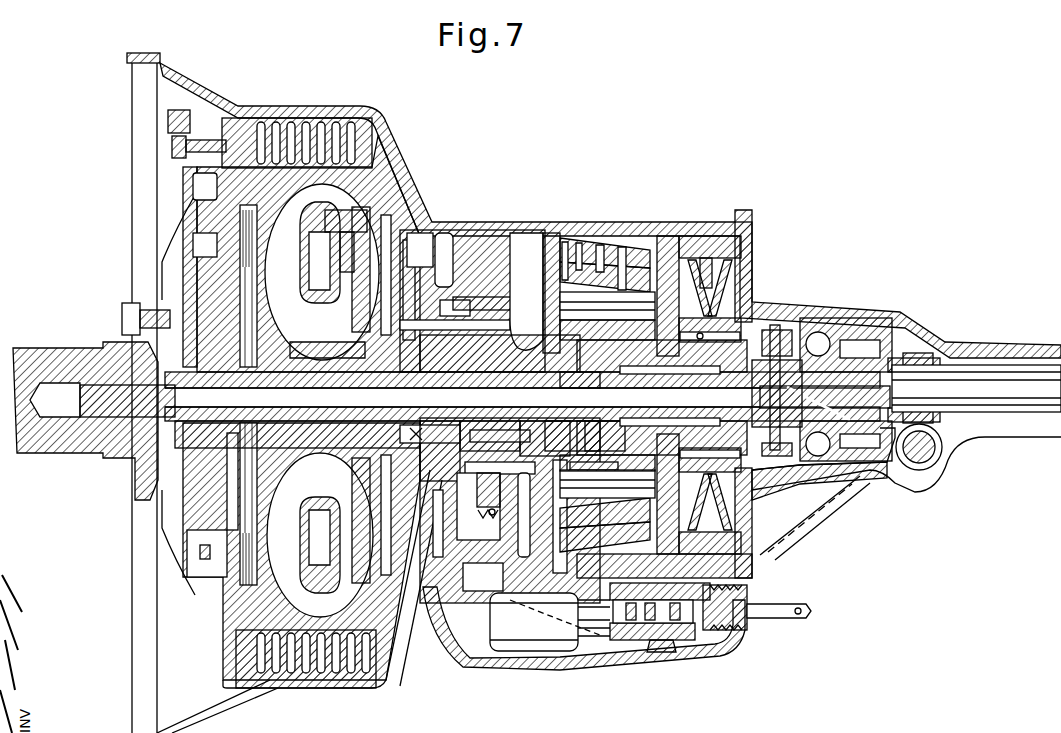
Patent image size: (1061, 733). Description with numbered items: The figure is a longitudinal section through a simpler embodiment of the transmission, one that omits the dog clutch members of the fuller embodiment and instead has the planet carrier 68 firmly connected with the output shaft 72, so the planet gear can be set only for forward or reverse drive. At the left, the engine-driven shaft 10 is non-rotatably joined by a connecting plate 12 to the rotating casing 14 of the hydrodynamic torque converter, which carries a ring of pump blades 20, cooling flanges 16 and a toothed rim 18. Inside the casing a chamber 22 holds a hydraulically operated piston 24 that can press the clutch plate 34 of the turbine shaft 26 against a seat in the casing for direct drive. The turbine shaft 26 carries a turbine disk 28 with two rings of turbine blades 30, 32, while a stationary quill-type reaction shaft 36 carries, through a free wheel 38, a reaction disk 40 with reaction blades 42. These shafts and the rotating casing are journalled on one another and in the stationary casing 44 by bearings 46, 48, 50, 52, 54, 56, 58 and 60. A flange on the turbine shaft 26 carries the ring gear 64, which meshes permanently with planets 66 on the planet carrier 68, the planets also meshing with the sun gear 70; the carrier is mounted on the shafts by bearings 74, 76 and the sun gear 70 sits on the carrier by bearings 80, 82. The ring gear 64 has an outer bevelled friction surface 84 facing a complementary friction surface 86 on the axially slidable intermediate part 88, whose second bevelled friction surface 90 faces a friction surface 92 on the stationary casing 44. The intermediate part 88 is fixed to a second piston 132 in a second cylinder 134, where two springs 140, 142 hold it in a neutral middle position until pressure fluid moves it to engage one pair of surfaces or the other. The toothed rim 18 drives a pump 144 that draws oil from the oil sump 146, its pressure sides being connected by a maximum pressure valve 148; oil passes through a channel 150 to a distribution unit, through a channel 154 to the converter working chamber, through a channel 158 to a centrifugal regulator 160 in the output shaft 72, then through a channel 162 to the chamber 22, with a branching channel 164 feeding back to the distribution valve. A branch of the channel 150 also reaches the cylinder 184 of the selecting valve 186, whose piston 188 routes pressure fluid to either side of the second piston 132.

The shaft 10 is at (78, 445).
The connecting plate 12 is at (170, 222).
The rotating casing 14 is at (388, 130).
The cooling flanges 16 is at (262, 125).
The toothed rim 18 is at (508, 300).
The pump blades 20 is at (296, 248).
The chamber 22 is at (180, 268).
The hydraulically operated piston 24 is at (215, 228).
The turbine shaft 26 is at (228, 393).
The turbine disk 28 is at (326, 348).
The turbine blades 30 is at (346, 225).
The turbine blades 32 is at (355, 290).
The clutch plate 34 is at (268, 512).
The reaction shaft 36 is at (518, 330).
The free wheel 38 is at (402, 420).
The reaction disk 40 is at (362, 322).
The reaction blades 42 is at (344, 248).
The stationary casing 44 is at (345, 108).
The bearing 46 is at (185, 405).
The bearing 48 is at (386, 410).
The bearing 50 is at (432, 425).
The bearing 52 is at (365, 470).
The bearing 54 is at (500, 494).
The bearing 56 is at (518, 310).
The bearing 58 is at (552, 425).
The bearing 60 is at (492, 430).
The ring gear 64 is at (556, 252).
The planets 66 is at (556, 270).
The planet carrier 68 is at (580, 304).
The sun gear 70 is at (625, 388).
The output shaft 72 is at (948, 385).
The bearing 74 is at (570, 380).
The bearing 76 is at (596, 422).
The bearing 80 is at (655, 388).
The bearing 82 is at (700, 350).
The bevelled friction surface 84 is at (552, 234).
The friction surface 86 is at (578, 234).
The intermediate part 88 is at (668, 236).
The second bevelled friction surface 90 is at (604, 234).
The friction surface 92 is at (630, 234).
The second piston 132 is at (752, 230).
The second cylinder 134 is at (695, 240).
The spring 140 is at (722, 272).
The spring 142 is at (735, 284).
The pump 144 is at (507, 262).
The oil sump 146 is at (495, 642).
The maximum pressure valve 148 is at (490, 535).
The channel 150 is at (510, 568).
The channel 154 is at (462, 425).
The channel 158 is at (826, 502).
The centrifugal regulator 160 is at (768, 340).
The channel 162 is at (330, 440).
The branching channel 164 is at (520, 425).
The cylinder 184 is at (672, 652).
The selecting valve 186 is at (705, 652).
The piston 188 is at (628, 642).